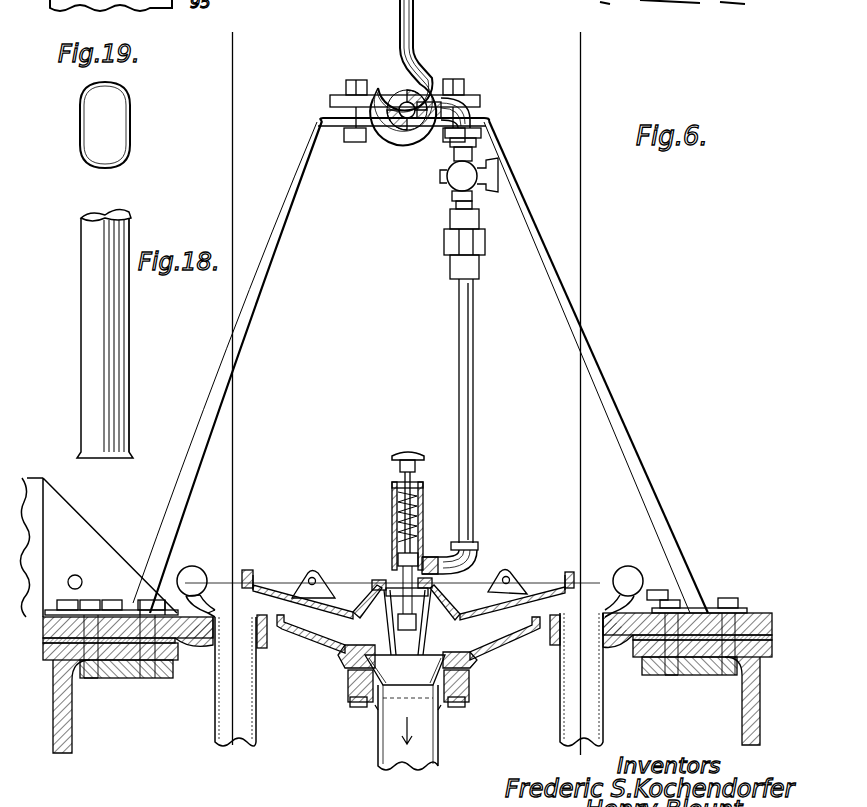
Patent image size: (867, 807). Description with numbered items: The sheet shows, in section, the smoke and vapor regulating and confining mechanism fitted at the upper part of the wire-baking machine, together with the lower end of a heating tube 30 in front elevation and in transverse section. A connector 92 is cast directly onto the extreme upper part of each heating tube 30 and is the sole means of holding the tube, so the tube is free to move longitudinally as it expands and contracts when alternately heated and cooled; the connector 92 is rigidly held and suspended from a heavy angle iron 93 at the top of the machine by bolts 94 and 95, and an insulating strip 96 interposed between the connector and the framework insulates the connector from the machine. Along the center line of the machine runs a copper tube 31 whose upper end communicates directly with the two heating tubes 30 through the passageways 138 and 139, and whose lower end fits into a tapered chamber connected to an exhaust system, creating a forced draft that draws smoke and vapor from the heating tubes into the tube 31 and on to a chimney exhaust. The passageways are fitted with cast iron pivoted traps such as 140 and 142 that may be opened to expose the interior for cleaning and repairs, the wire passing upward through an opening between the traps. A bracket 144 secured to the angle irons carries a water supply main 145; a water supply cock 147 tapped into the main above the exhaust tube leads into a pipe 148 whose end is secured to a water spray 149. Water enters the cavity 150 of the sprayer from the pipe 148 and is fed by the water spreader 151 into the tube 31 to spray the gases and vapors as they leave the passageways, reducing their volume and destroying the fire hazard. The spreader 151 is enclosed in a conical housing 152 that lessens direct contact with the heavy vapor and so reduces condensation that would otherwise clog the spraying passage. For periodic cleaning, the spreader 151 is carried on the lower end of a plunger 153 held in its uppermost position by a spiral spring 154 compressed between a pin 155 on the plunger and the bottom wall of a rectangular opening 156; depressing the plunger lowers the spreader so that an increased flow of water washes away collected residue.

In FIG. 19, the heating tube 30 is at (130, 115).
In FIG. 18, the heating tube 30 is at (80, 294).
In FIG. 6, the heating tube 30 is at (256, 730).
In FIG. 6, the copper tube 31 is at (432, 717).
In FIG. 6, the connector 92 is at (205, 645).
In FIG. 6, the angle iron 93 is at (106, 676).
In FIG. 6, the bolt 94 is at (92, 598).
In FIG. 6, the bolt 95 is at (142, 598).
In FIG. 6, the insulating strip 96 is at (45, 645).
In FIG. 6, the passageway 138 is at (500, 632).
In FIG. 6, the passageway 139 is at (310, 628).
In FIG. 6, the pivoted trap 140 is at (538, 583).
In FIG. 6, the pivoted trap 142 is at (270, 588).
In FIG. 6, the bracket 144 is at (532, 263).
In FIG. 6, the water supply main 145 is at (400, 90).
In FIG. 6, the water supply cock 147 is at (455, 178).
In FIG. 6, the pipe 148 is at (474, 352).
In FIG. 6, the water spray 149 is at (396, 570).
In FIG. 6, the cavity 150 is at (424, 560).
In FIG. 6, the water spreader 151 is at (445, 593).
In FIG. 6, the conical housing 152 is at (440, 632).
In FIG. 6, the plunger 153 is at (412, 452).
In FIG. 6, the spiral spring 154 is at (420, 500).
In FIG. 6, the pin 155 is at (400, 485).
In FIG. 6, the rectangular opening 156 is at (394, 515).